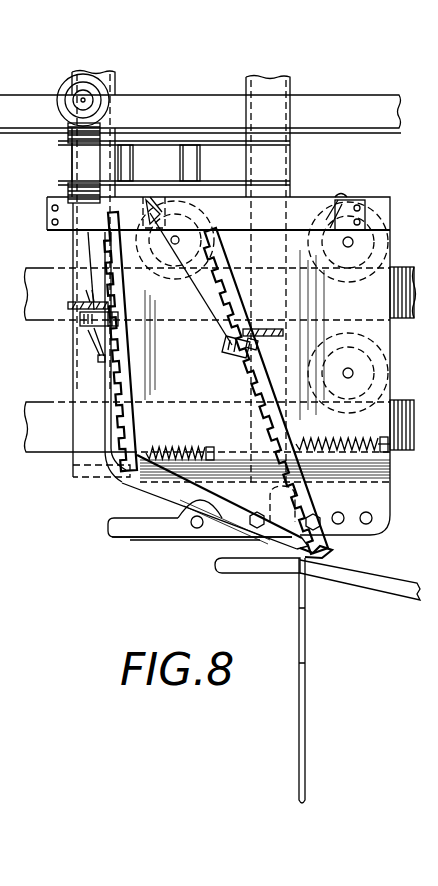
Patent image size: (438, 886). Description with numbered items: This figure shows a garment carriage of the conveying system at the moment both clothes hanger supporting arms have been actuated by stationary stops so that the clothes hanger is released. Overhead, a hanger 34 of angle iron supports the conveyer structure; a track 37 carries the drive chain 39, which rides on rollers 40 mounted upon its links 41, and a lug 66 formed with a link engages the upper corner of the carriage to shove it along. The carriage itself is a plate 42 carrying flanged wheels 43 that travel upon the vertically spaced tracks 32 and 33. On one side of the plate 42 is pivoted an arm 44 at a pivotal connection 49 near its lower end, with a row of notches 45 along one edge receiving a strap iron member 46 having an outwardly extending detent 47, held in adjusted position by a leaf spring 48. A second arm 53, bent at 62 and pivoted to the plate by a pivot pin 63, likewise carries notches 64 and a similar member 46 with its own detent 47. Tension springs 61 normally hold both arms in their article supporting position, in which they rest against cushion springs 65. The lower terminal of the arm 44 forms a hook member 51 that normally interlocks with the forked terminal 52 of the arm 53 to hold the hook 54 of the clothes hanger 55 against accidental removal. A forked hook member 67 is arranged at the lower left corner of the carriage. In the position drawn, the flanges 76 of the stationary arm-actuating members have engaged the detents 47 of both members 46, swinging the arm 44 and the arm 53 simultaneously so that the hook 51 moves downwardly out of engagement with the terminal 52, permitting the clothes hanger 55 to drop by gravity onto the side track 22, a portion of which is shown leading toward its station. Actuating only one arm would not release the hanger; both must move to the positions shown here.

The side track 22 is at (395, 586).
The track 32 is at (24, 268).
The track 33 is at (30, 462).
The hanger 34 is at (114, 76).
The track 37 is at (201, 98).
The drive chain 39 is at (150, 140).
The roller 40 is at (88, 80).
The link 41 is at (88, 144).
The plate 42 is at (384, 336).
The flanged wheel 43 is at (212, 222).
The arm 44 is at (390, 487).
The notch 45 is at (222, 262).
The member 46 is at (84, 326).
The detent 47 is at (114, 318).
The leaf spring 48 is at (90, 343).
The pivotal connection 49 is at (320, 516).
The hook member 51 is at (332, 552).
The forked terminal 52 is at (278, 532).
The arm 53 is at (105, 381).
The hook 54 is at (298, 594).
The clothes hanger 55 is at (305, 722).
The tension spring 61 is at (180, 445).
The bend 62 is at (118, 488).
The pivot pin 63 is at (238, 540).
The notch 64 is at (133, 350).
The cushion spring 65 is at (147, 214).
The lug 66 is at (68, 193).
The hook member 67 is at (112, 530).
The flange 76 is at (68, 306).